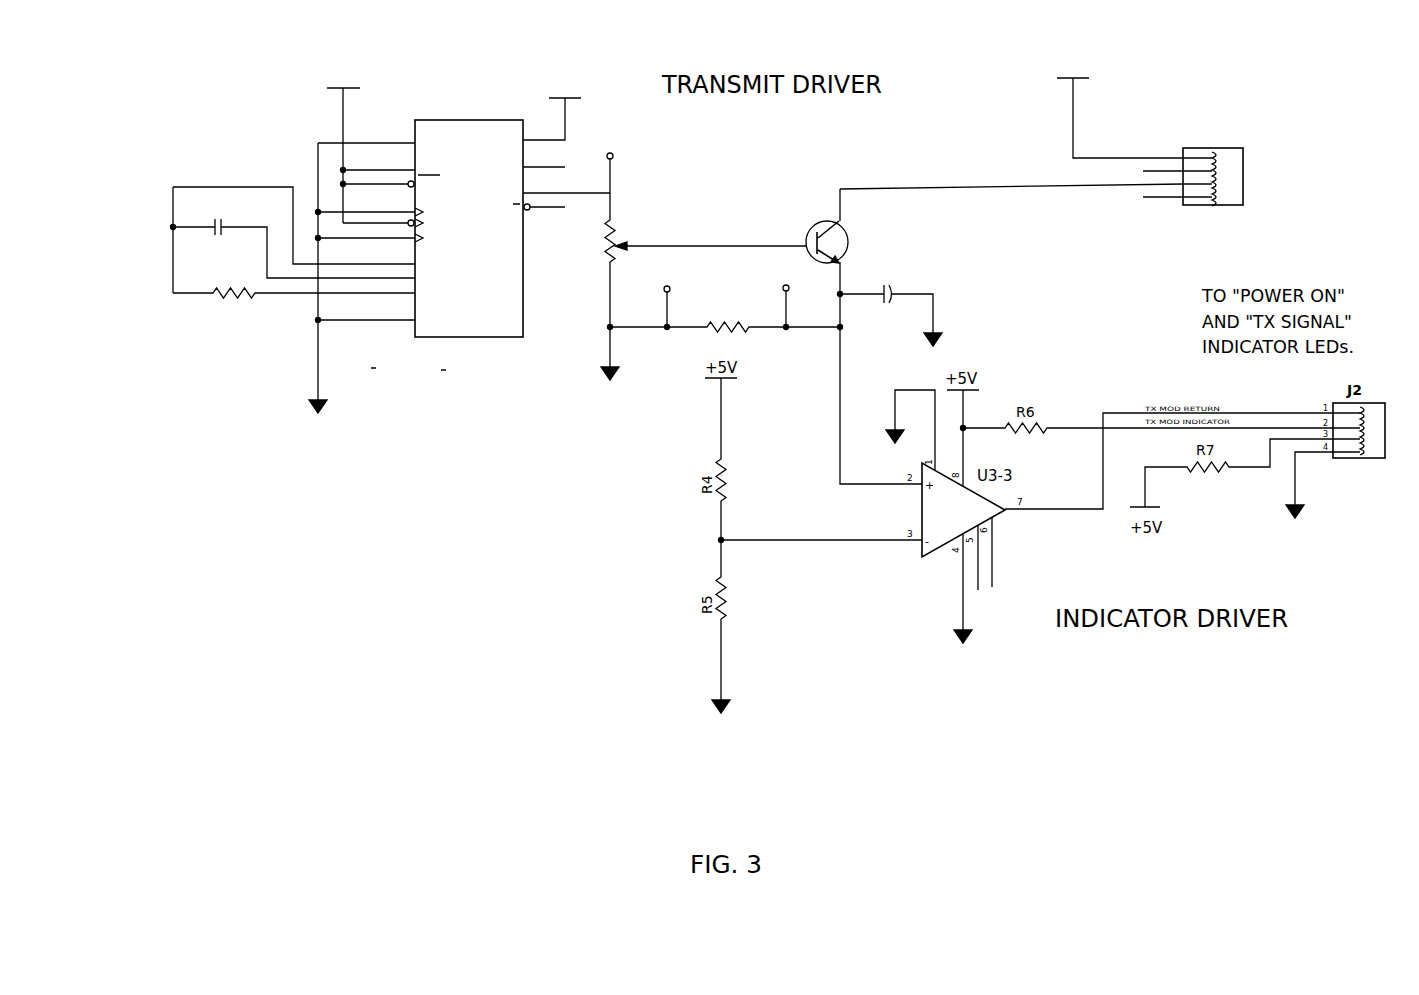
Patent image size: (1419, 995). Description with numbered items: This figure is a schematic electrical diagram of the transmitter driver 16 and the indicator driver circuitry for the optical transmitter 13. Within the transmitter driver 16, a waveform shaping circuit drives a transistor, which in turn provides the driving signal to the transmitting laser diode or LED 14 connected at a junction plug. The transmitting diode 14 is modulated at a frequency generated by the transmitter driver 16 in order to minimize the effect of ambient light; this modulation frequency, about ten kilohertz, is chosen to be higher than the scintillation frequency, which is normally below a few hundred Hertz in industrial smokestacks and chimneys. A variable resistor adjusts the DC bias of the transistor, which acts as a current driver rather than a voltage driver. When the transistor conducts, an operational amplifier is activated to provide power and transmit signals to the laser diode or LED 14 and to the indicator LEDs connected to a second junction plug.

The optical transmitter 13 is at (439, 741).
The transmitting laser diode or LED 14 is at (1255, 169).
The transmitter driver 16 is at (472, 372).